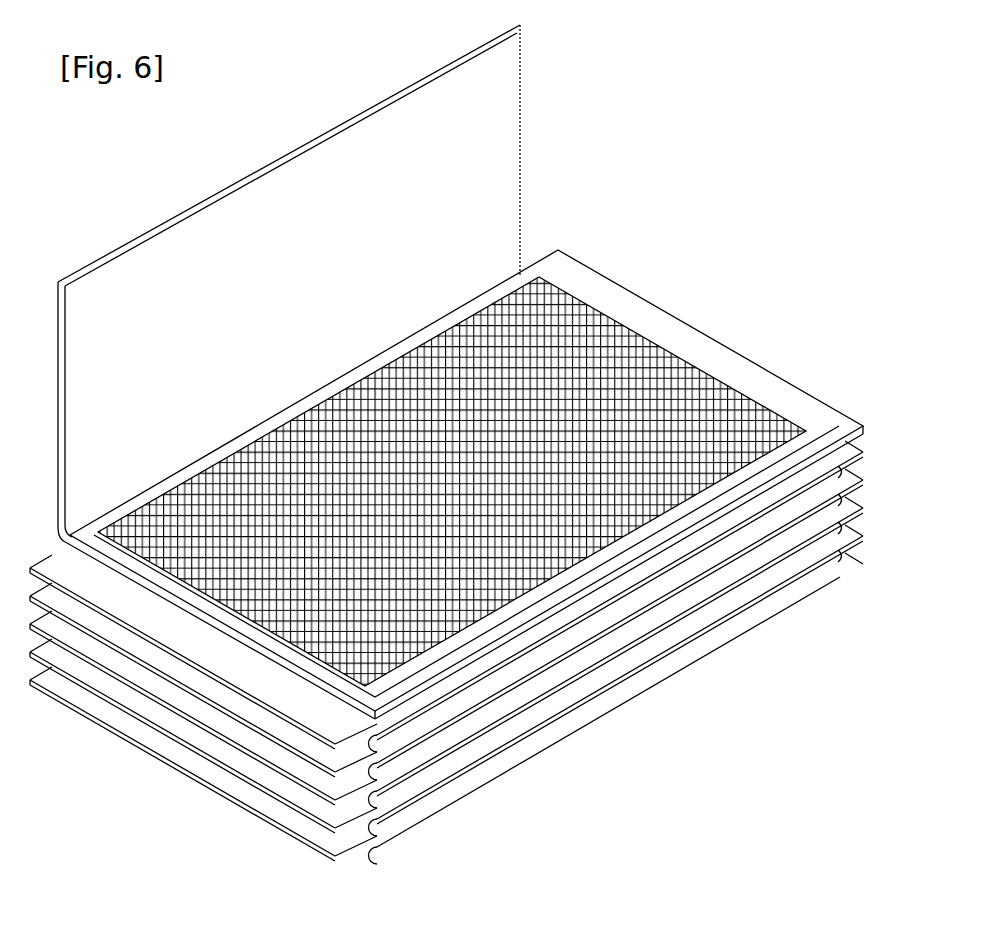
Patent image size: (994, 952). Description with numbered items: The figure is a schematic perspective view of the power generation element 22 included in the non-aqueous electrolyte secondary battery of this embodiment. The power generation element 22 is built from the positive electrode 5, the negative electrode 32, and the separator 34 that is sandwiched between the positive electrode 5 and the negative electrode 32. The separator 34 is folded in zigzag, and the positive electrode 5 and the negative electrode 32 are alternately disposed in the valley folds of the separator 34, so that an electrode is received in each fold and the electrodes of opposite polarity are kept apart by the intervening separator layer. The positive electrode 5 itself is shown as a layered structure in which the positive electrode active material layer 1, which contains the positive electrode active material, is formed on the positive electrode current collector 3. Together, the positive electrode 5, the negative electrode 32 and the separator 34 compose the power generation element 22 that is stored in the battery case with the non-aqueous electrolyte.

The positive electrode active material layer 1 is at (590, 335).
The positive electrode current collector 3 is at (662, 330).
The positive electrode 5 is at (466, 480).
The power generation element 22 is at (790, 121).
The negative electrode 32 is at (128, 675).
The separator 34 is at (500, 173).